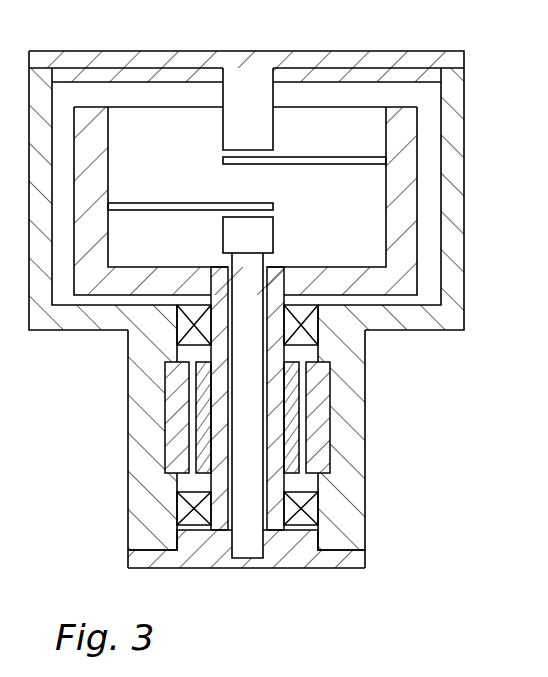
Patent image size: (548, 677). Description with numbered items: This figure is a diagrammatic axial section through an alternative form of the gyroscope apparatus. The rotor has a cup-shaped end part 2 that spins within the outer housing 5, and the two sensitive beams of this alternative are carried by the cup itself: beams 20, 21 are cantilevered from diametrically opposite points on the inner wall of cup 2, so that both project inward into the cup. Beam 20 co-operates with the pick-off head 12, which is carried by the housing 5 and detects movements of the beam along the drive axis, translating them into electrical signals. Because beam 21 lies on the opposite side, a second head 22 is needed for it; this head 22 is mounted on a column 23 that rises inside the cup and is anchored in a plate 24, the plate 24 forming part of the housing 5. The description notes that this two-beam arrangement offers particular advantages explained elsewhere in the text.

The cup-shaped end part 2 is at (419, 228).
The outer housing 5 is at (353, 412).
The pick-off head 12 is at (255, 78).
The beam 20 is at (312, 156).
The beam 21 is at (202, 178).
The second head 22 is at (263, 232).
The column 23 is at (252, 485).
The plate 24 is at (307, 560).